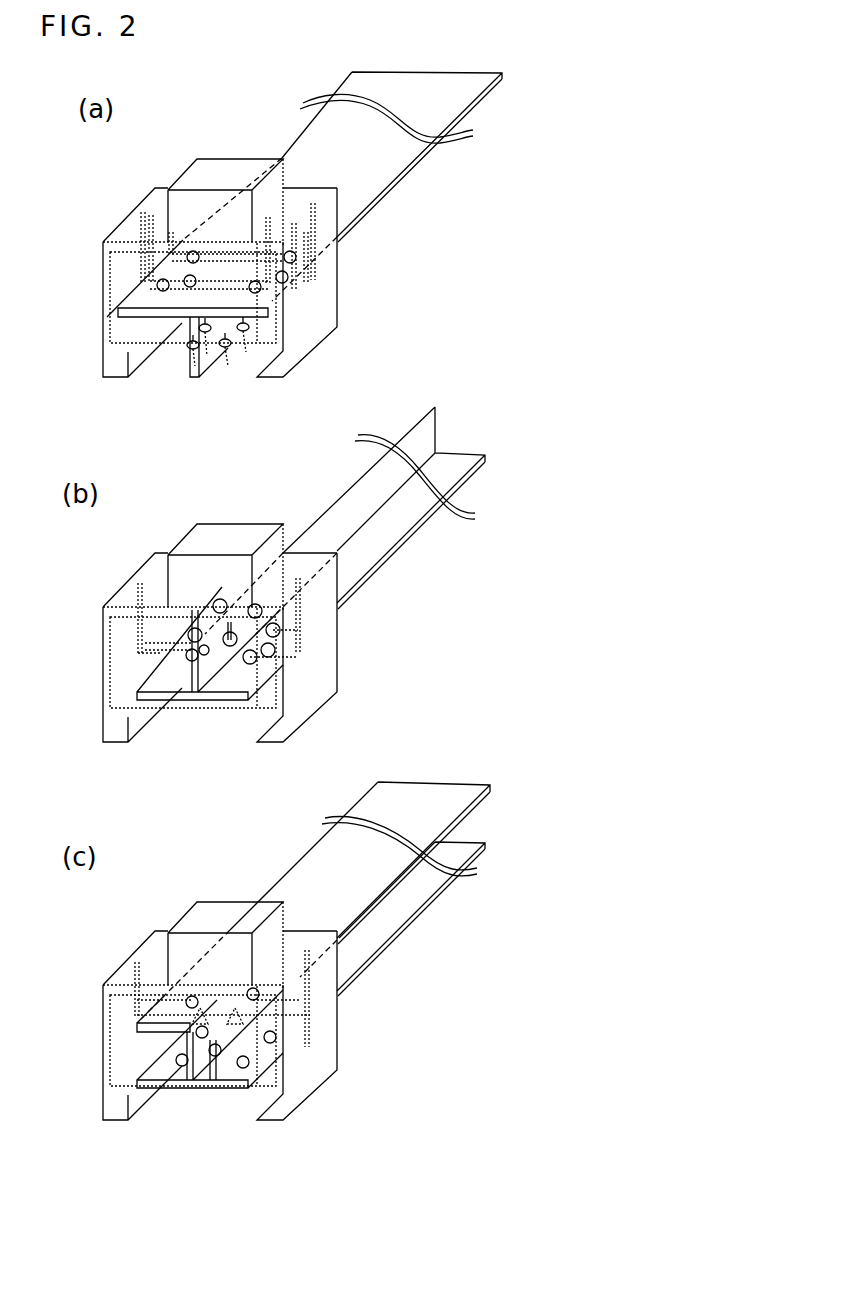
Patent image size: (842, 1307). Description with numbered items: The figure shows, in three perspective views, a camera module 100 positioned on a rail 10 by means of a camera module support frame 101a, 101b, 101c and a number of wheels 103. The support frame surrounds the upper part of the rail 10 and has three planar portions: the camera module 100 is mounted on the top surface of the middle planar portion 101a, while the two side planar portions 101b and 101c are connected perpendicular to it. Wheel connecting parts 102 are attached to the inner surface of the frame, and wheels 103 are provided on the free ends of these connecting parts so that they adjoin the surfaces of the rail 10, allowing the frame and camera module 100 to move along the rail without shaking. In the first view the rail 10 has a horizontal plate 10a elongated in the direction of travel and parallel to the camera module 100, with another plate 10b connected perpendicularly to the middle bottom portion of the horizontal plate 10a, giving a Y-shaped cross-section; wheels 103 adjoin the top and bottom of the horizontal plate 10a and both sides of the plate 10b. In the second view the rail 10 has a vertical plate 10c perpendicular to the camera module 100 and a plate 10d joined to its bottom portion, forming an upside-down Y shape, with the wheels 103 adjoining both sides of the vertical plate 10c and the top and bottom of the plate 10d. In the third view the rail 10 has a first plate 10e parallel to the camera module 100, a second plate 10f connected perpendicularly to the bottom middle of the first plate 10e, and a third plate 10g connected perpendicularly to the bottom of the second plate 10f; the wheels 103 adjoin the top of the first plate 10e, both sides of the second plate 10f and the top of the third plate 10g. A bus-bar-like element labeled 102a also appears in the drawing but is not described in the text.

The camera module 100 is at (218, 170).
The planar portion 101a is at (152, 207).
The planar portion 101b is at (118, 258).
The planar portion 101c is at (330, 302).
The wheel connecting part 102 is at (170, 232).
The bus bar terminal 102a is at (148, 640).
The wheel 103 is at (190, 250).
The rail 10 is at (165, 753).
The horizontal plate 10a is at (120, 307).
The plate 10b is at (197, 368).
The vertical plate 10c is at (193, 682).
The plate 10d is at (222, 688).
The first plate 10e is at (157, 1023).
The second plate 10f is at (190, 1082).
The third plate 10g is at (213, 1082).